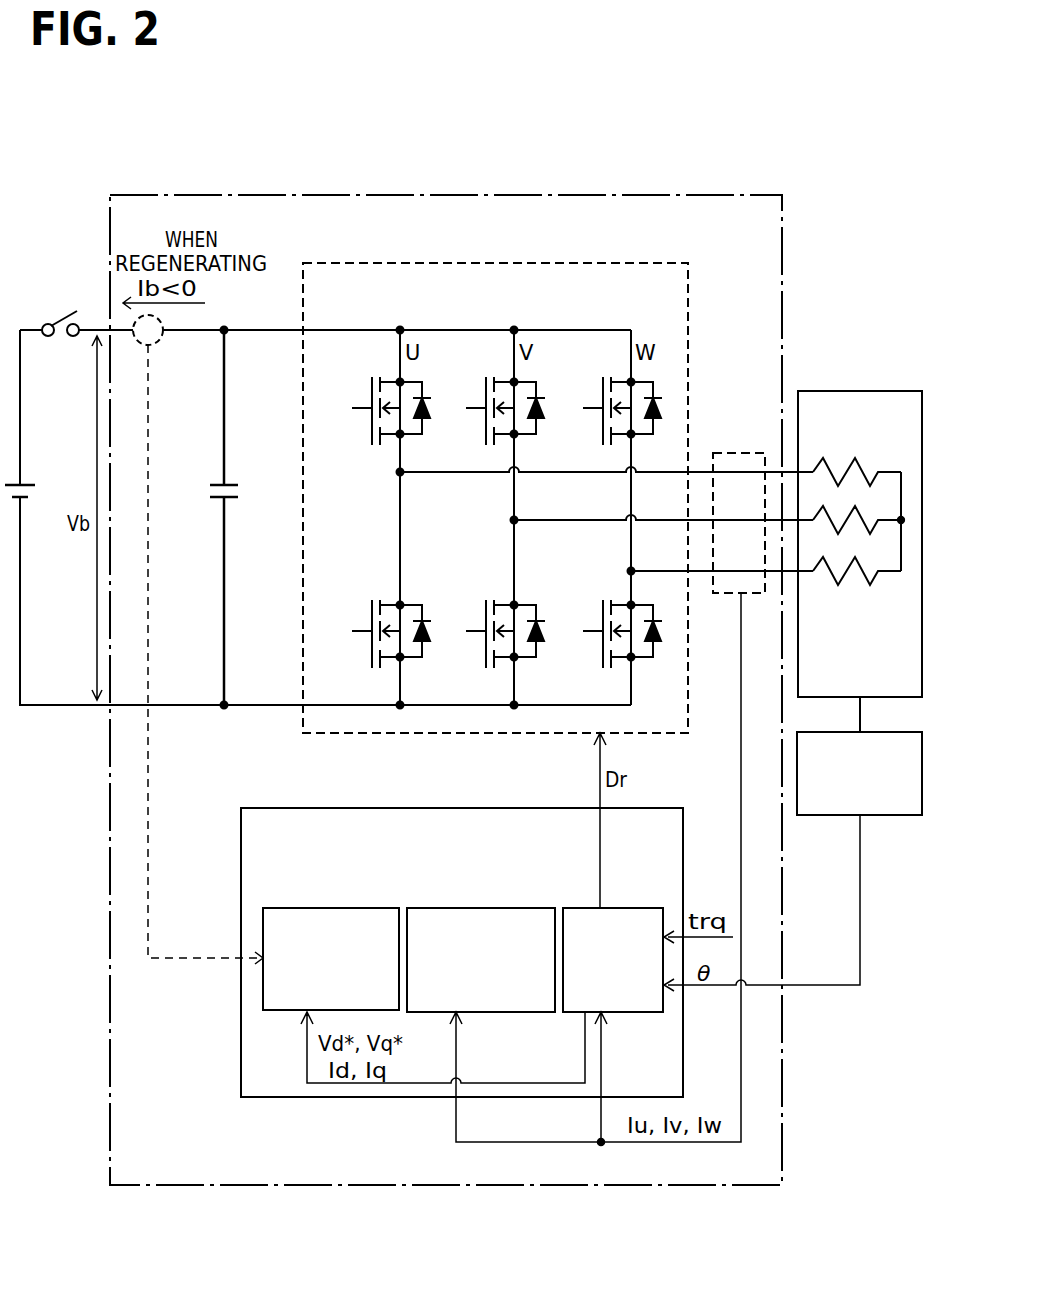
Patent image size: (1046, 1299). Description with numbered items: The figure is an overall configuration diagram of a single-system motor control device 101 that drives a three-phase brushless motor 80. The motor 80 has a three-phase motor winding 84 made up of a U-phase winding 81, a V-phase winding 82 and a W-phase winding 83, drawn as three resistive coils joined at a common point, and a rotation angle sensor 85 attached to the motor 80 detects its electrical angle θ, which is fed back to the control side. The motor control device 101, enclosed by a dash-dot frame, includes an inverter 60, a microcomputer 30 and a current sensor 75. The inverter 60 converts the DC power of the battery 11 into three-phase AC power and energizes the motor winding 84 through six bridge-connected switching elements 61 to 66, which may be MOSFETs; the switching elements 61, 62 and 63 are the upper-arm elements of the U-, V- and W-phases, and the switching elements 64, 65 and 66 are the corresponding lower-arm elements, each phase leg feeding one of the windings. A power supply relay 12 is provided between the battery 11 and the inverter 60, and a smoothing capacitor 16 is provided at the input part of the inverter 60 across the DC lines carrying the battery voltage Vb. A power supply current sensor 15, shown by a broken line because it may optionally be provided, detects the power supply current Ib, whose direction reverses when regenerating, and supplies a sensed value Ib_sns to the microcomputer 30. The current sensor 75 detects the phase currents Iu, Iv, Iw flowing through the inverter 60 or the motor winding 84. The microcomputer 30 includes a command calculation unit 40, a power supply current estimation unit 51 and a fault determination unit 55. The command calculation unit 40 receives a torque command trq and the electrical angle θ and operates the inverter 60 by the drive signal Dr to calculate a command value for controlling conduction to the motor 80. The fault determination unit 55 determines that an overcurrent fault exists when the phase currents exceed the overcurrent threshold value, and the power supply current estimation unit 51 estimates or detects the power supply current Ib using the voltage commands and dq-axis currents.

The motor control device 101 is at (452, 193).
The inverter 60 is at (628, 262).
The power supply relay 12 is at (55, 323).
The power supply current sensor 15 is at (163, 348).
The battery 11 is at (25, 484).
The smoothing capacitor 16 is at (227, 484).
The switching element 61 is at (393, 380).
The switching element 62 is at (507, 380).
The switching element 63 is at (624, 380).
The switching element 64 is at (407, 603).
The switching element 65 is at (521, 603).
The switching element 66 is at (625, 603).
The current sensor 75 is at (736, 452).
The motor 80 is at (860, 531).
The U-phase winding 81 is at (857, 463).
The V-phase winding 82 is at (866, 521).
The W-phase winding 83 is at (880, 577).
The motor winding 84 is at (857, 620).
The rotation angle sensor 85 is at (836, 815).
The microcomputer 30 is at (447, 808).
The power supply current estimation unit 51 is at (293, 908).
The fault determination unit 55 is at (433, 908).
The command calculation unit 40 is at (583, 908).